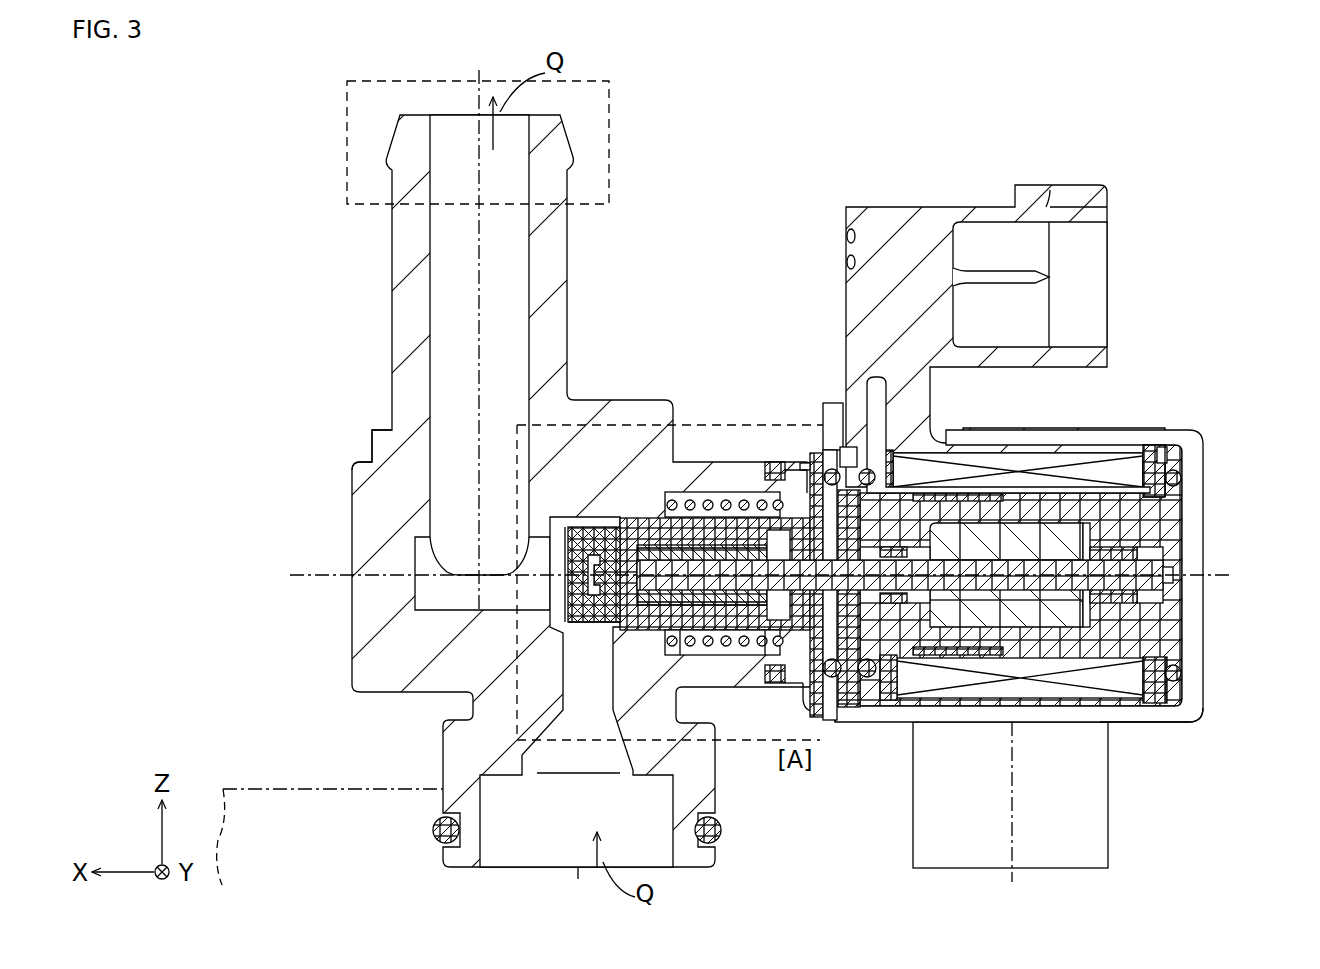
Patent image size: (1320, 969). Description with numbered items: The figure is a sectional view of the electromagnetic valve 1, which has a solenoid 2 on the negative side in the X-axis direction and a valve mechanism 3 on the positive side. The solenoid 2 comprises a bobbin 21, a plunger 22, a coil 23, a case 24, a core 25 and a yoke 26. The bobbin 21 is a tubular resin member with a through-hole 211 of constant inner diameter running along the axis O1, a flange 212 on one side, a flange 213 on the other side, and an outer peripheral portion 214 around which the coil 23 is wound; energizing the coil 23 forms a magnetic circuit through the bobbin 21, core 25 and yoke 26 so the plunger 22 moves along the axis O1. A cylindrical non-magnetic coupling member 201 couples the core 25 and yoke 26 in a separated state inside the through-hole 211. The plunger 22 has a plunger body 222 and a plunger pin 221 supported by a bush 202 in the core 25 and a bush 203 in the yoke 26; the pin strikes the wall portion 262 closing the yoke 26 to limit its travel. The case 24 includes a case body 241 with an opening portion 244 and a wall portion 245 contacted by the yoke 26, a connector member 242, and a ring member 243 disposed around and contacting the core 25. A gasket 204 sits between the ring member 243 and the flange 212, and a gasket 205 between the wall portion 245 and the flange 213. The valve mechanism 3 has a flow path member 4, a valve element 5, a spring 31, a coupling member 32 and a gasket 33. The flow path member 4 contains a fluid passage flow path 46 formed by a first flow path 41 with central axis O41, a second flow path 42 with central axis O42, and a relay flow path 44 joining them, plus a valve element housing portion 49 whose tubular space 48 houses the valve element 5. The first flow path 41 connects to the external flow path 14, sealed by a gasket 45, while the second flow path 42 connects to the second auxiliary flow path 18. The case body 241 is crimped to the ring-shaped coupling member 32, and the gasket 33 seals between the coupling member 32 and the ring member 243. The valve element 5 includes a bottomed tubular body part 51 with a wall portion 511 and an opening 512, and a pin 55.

The electromagnetic valve 1 is at (1222, 142).
The solenoid 2 is at (1155, 232).
The valve mechanism 3 is at (328, 360).
The flow path member 4 is at (356, 462).
The valve element 5 is at (602, 527).
The external flow path 14 is at (312, 789).
The second auxiliary flow path 18 is at (347, 130).
The bobbin 21 is at (1166, 447).
The plunger 22 is at (1045, 482).
The coil 23 is at (1032, 450).
The case 24 is at (1202, 432).
The core 25 is at (856, 702).
The yoke 26 is at (1100, 600).
The spring 31 is at (727, 647).
The coupling member 32 is at (790, 462).
The gasket 33 is at (832, 680).
The first flow path 41 is at (555, 866).
The second flow path 42 is at (455, 135).
The relay flow path 44 is at (537, 550).
The gasket 45 is at (722, 834).
The fluid passage flow path 46 is at (528, 475).
The tubular space 48 is at (745, 545).
The valve element housing portion 49 is at (742, 500).
The body part 51 is at (596, 527).
The pin 55 is at (816, 453).
The coupling member 201 is at (935, 622).
The bush 202 is at (975, 760).
The bush 203 is at (1158, 670).
The gasket 204 is at (867, 680).
The gasket 205 is at (1181, 480).
The through-hole 211 is at (1102, 458).
The flange 212 is at (886, 418).
The flange 213 is at (1168, 455).
The outer peripheral portion 214 is at (1080, 472).
The plunger pin 221 is at (983, 655).
The plunger body 222 is at (1030, 612).
The case body 241 is at (1172, 720).
The connector member 242 is at (910, 237).
The ring member 243 is at (848, 447).
The opening portion 244 is at (806, 688).
The wall portion 245 is at (1190, 534).
The wall portion 262 is at (1160, 596).
The wall portion 511 is at (597, 633).
The opening 512 is at (850, 686).
The axis O1 is at (335, 575).
The central axis O41 is at (578, 840).
The central axis O42 is at (479, 208).